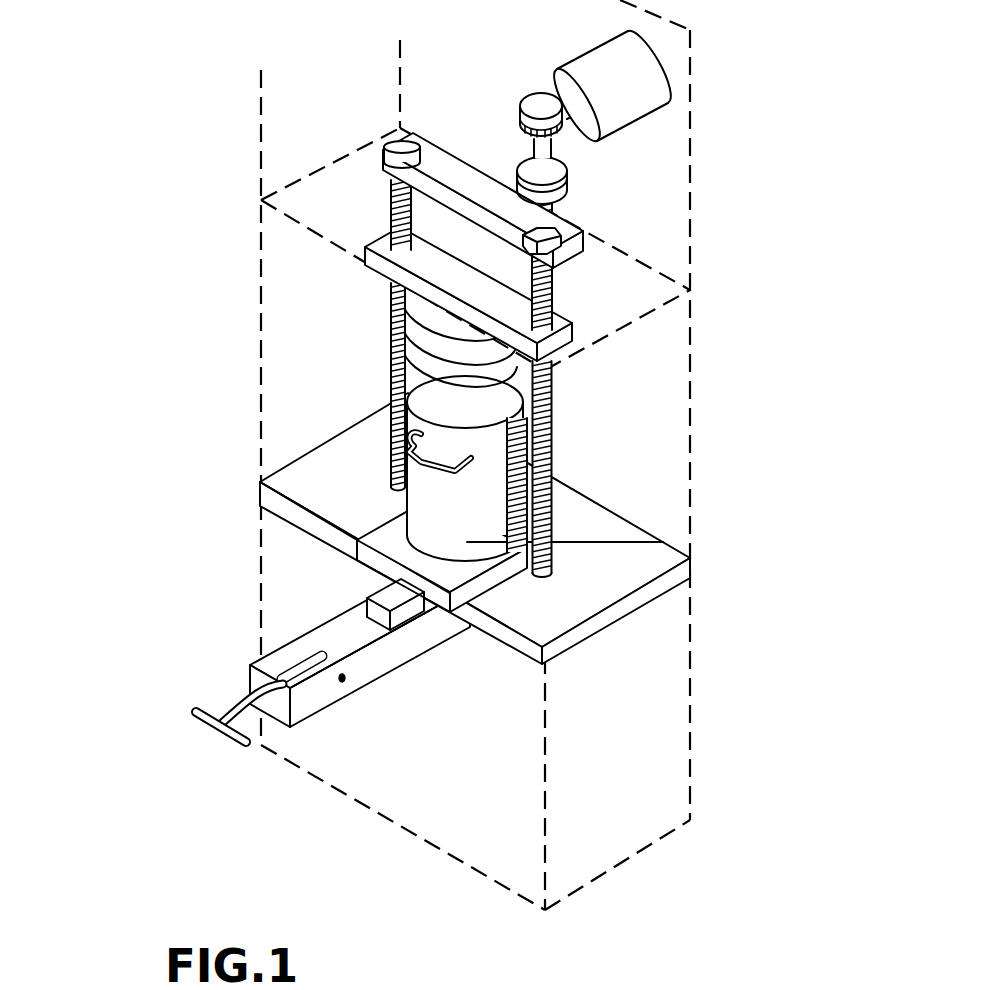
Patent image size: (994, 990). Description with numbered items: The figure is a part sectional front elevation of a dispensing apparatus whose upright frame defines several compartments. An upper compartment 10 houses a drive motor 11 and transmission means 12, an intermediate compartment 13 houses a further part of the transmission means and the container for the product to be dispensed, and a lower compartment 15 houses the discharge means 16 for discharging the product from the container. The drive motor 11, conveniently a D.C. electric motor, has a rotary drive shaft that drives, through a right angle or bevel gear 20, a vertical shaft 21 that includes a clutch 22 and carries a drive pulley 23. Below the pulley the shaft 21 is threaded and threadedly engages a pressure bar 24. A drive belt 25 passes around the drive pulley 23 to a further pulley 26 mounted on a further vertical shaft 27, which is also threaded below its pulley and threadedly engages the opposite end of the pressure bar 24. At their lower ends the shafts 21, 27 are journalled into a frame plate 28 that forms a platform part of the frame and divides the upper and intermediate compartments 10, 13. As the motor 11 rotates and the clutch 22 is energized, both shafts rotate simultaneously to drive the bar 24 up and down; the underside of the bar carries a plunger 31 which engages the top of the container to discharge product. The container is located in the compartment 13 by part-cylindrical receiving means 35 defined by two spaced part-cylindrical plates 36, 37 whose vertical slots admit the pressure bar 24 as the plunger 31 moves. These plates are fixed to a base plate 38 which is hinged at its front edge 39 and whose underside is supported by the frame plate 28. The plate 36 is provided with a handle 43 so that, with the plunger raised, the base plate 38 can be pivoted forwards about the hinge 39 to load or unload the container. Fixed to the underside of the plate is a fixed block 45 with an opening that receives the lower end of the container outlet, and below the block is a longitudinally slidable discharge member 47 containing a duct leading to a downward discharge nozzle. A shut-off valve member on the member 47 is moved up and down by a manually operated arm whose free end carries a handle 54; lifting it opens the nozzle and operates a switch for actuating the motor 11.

The upper compartment 10 is at (352, 162).
The drive motor 11 is at (667, 68).
The transmission means 12 is at (590, 204).
The intermediate compartment 13 is at (257, 316).
The lower compartment 15 is at (283, 612).
The discharge means 16 is at (372, 708).
The bevel gear 20 is at (530, 110).
The vertical shaft 21 is at (553, 290).
The clutch 22 is at (570, 163).
The drive pulley 23 is at (560, 250).
The pressure bar 24 is at (548, 363).
The drive belt 25 is at (460, 177).
The further pulley 26 is at (383, 148).
The further vertical shaft 27 is at (395, 213).
The frame plate 28 is at (587, 596).
The plunger 31 is at (495, 367).
The receiving means 35 is at (488, 405).
The part-cylindrical plate 36 is at (663, 542).
The part-cylindrical plate 37 is at (525, 464).
The base plate 38 is at (390, 537).
The front edge 39 is at (357, 551).
The handle 43 is at (415, 440).
The fixed block 45 is at (403, 608).
The discharge member 47 is at (320, 697).
The handle 54 is at (207, 723).